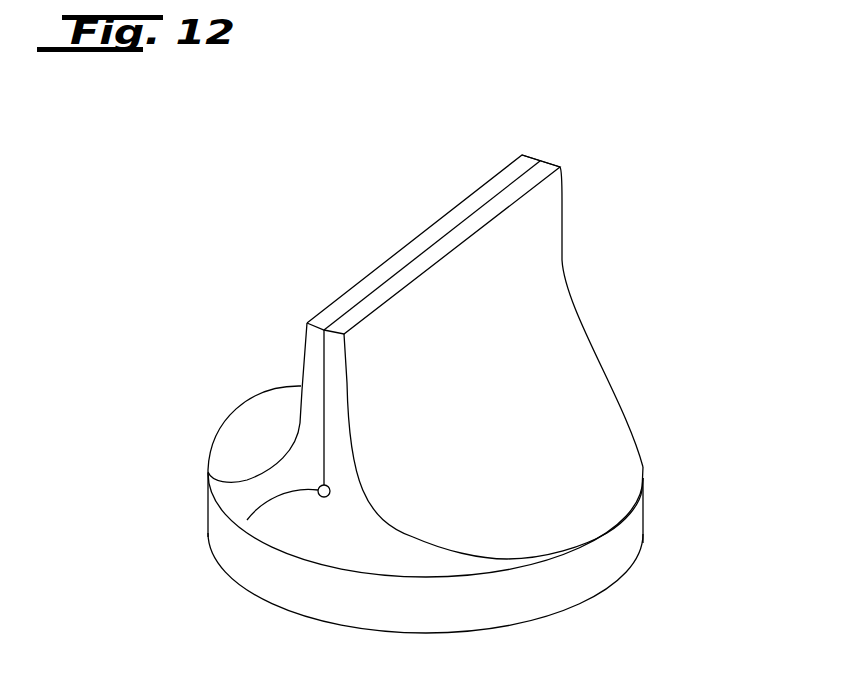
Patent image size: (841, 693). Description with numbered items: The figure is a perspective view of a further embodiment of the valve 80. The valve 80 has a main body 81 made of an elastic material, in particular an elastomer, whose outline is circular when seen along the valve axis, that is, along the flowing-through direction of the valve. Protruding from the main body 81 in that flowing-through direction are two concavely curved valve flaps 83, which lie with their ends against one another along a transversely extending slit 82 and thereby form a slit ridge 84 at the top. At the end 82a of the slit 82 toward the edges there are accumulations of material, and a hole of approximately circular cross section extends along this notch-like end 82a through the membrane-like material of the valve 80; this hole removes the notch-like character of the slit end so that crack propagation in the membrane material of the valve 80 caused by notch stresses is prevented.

The valve 80 is at (455, 337).
The main body 81 is at (633, 530).
The slit 82 is at (428, 242).
The end of the slit 82a is at (247, 520).
The valve flap 83 is at (300, 390).
The slit ridge 84 is at (550, 153).